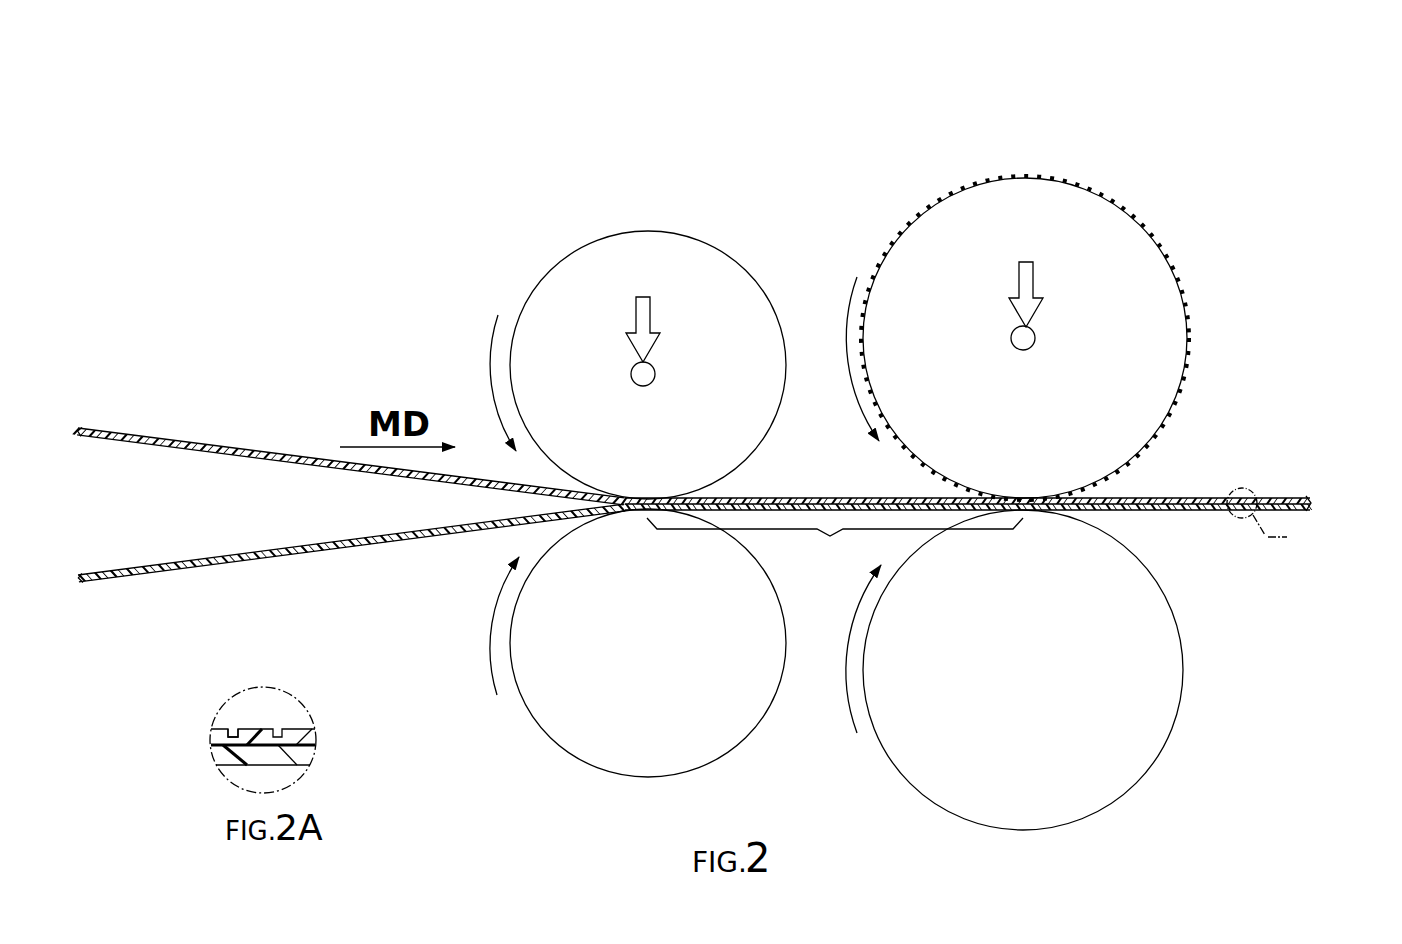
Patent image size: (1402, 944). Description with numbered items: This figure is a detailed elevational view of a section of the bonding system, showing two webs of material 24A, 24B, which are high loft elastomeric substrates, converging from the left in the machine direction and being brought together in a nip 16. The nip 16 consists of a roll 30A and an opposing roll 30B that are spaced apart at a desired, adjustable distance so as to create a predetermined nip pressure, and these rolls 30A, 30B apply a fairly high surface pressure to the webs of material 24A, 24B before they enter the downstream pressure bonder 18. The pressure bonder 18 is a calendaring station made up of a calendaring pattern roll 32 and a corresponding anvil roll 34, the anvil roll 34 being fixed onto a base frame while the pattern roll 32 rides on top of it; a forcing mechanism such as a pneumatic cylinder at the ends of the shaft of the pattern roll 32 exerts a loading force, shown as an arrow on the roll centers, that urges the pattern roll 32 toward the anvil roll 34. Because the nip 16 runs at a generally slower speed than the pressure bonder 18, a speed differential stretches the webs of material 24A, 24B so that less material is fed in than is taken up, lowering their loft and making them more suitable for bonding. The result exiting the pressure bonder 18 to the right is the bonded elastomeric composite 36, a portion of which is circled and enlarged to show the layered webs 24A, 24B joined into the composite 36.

In FIG. 2, the nip 16 is at (517, 209).
In FIG. 2, the pressure bonder 18 is at (881, 188).
In FIG. 2, the web of material 24A is at (190, 560).
In FIG. 2A, the web of material 24A is at (222, 752).
In FIG. 2, the web of material 24B is at (205, 445).
In FIG. 2A, the web of material 24B is at (222, 740).
In FIG. 2, the roll 30A is at (665, 477).
In FIG. 2, the opposing roll 30B is at (669, 656).
In FIG. 2, the calendaring pattern roll 32 is at (1043, 477).
In FIG. 2, the anvil roll 34 is at (1039, 679).
In FIG. 2, the elastomeric composite 36 is at (1181, 500).
In FIG. 2A, the elastomeric composite 36 is at (231, 727).